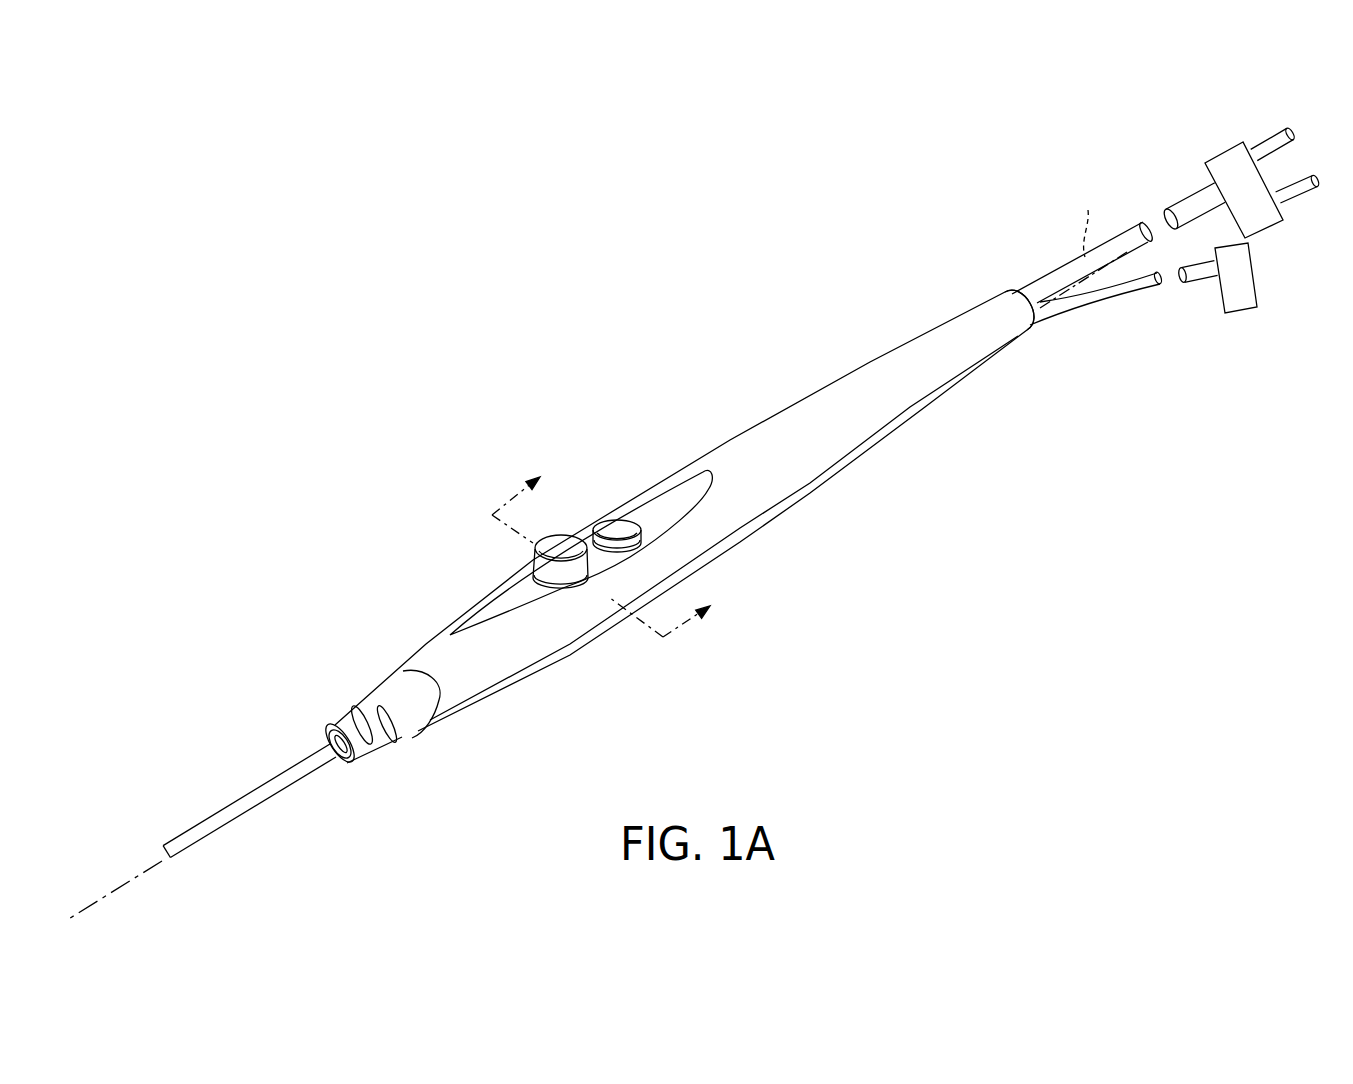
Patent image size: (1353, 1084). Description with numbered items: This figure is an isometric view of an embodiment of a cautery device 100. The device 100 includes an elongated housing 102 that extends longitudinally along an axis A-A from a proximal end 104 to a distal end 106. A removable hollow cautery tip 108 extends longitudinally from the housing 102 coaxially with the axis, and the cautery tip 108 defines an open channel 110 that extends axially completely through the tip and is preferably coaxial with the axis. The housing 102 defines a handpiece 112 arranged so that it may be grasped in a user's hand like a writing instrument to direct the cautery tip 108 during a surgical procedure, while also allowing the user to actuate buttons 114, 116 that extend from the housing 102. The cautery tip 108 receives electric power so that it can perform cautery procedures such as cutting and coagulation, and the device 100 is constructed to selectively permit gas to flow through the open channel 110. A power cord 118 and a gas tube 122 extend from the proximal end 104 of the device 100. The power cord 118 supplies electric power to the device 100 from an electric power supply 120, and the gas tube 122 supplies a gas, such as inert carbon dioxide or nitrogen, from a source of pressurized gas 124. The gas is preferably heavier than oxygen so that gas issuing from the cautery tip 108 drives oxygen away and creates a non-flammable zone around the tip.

The cautery device 100 is at (727, 378).
The elongated housing 102 is at (786, 485).
The proximal end 104 is at (1017, 287).
The distal end 106 is at (397, 745).
The removable hollow cautery tip 108 is at (227, 810).
The open channel 110 is at (167, 860).
The handpiece 112 is at (481, 562).
The button 114 is at (562, 545).
The button 116 is at (618, 528).
The power cord 118 is at (1137, 223).
The electric power supply 120 is at (1223, 153).
The gas tube 122 is at (1107, 307).
The source of pressurized gas 124 is at (1257, 280).